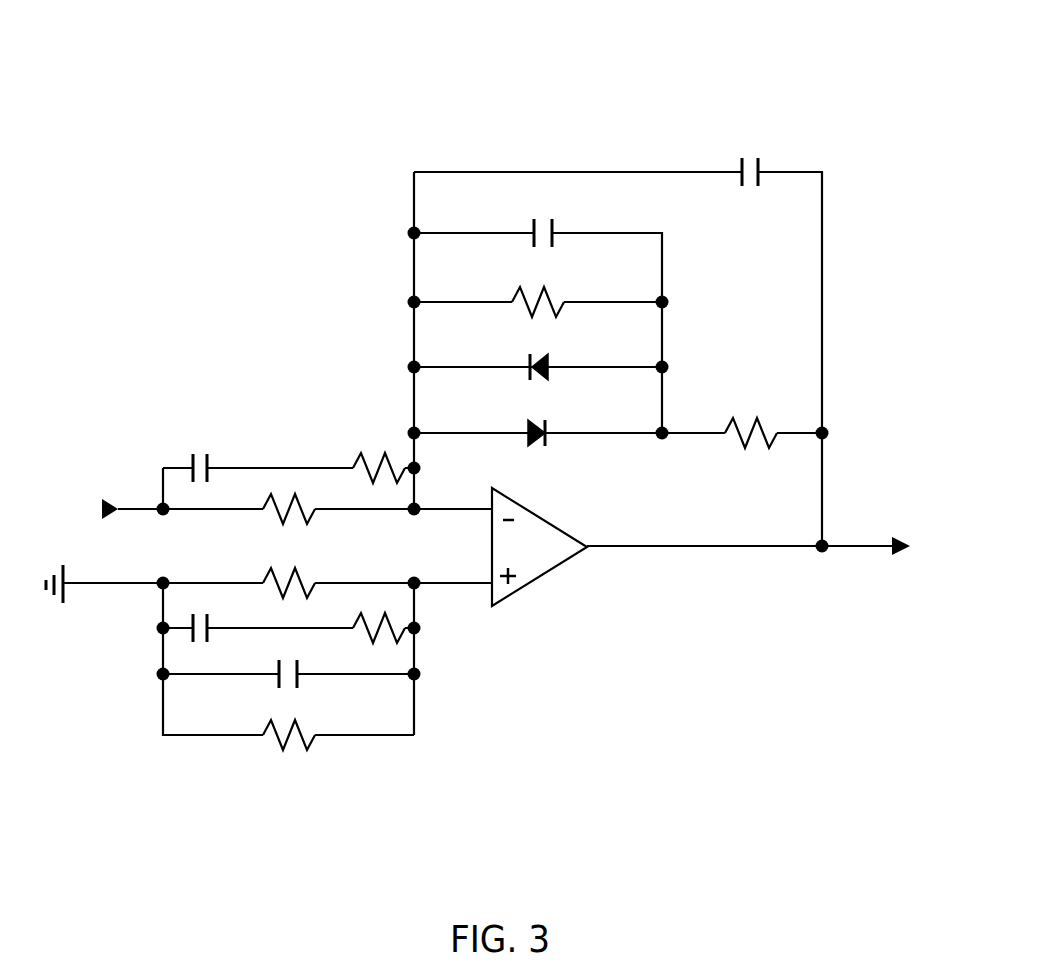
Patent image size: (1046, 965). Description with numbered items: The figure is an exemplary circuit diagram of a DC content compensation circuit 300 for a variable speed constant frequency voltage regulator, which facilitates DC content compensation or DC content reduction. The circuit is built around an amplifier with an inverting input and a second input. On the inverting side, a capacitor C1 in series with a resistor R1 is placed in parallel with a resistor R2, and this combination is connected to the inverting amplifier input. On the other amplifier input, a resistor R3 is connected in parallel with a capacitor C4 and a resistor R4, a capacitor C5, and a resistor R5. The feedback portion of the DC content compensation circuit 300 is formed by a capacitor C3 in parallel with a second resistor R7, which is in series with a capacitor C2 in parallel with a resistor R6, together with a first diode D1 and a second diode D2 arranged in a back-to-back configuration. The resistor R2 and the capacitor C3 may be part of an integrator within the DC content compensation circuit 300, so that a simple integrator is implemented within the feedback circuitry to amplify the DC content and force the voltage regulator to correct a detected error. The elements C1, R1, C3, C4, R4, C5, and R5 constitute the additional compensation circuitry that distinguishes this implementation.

The DC content compensation circuit 300 is at (258, 52).
The capacitor C1 is at (200, 455).
The capacitor C2 is at (544, 220).
The capacitor C3 is at (748, 155).
The capacitor C4 is at (200, 617).
The capacitor C5 is at (288, 662).
The resistor R1 is at (379, 456).
The resistor R2 is at (289, 498).
The resistor R3 is at (289, 570).
The resistor R4 is at (379, 618).
The resistor R5 is at (289, 724).
The resistor R6 is at (538, 288).
The second resistor R7 is at (751, 421).
The first diode D1 is at (540, 420).
The second diode D2 is at (540, 354).